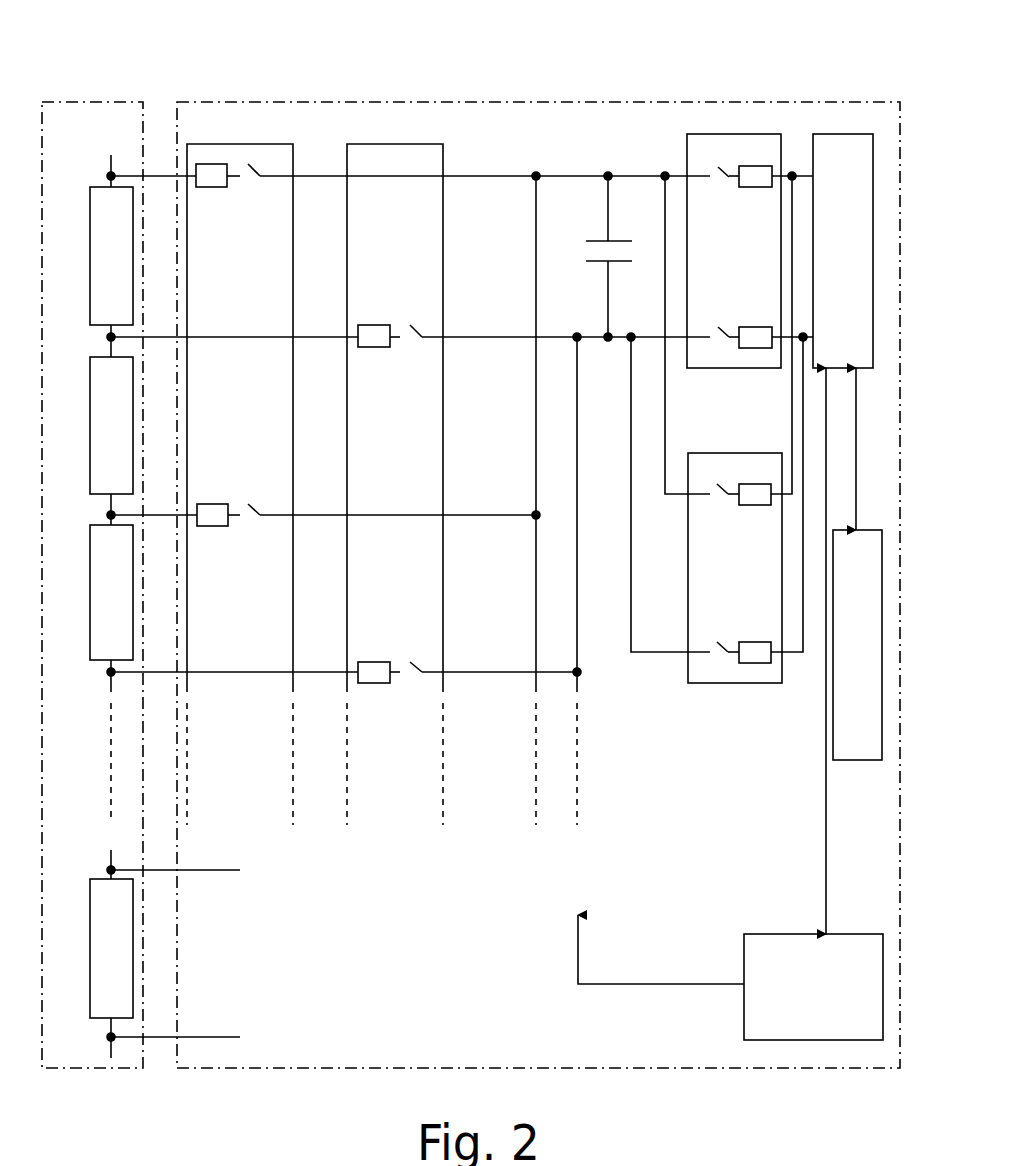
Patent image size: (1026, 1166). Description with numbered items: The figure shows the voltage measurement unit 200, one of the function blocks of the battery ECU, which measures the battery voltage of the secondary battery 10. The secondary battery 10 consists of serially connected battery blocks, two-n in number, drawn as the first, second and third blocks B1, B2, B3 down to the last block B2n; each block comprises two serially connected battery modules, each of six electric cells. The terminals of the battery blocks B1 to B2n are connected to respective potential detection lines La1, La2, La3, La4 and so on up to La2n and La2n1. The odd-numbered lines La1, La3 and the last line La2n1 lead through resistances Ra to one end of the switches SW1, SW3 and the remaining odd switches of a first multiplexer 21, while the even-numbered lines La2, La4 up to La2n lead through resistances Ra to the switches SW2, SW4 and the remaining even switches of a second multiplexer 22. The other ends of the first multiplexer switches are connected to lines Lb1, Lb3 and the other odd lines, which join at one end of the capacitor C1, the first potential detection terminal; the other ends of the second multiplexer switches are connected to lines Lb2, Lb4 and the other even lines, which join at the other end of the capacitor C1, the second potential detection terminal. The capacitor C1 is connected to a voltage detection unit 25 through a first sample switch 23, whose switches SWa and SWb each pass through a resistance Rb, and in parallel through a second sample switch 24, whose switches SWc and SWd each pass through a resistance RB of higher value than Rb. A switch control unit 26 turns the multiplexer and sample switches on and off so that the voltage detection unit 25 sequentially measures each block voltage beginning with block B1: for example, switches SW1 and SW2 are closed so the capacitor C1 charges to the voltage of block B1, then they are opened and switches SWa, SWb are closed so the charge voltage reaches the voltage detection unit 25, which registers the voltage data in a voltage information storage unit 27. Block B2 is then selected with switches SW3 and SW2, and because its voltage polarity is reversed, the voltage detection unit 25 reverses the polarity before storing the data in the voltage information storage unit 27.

The secondary battery 10 is at (80, 102).
The voltage measurement unit 200 is at (495, 102).
The first multiplexer 21 is at (263, 144).
The second multiplexer 22 is at (420, 144).
The first sample switch 23 is at (732, 134).
The second sample switch 24 is at (733, 453).
The voltage detection unit 25 is at (867, 134).
The switch control unit 26 is at (752, 934).
The voltage information storage unit 27 is at (875, 530).
The battery block B1 is at (95, 256).
The battery block B2 is at (95, 441).
The battery block B3 is at (95, 608).
The battery block B2n is at (91, 954).
The capacitor C1 is at (587, 256).
The switch SW1 is at (217, 80).
The switch SW2 is at (377, 253).
The switch SW3 is at (237, 475).
The switch SW4 is at (370, 590).
The switch SWa is at (768, 90).
The switch SWb is at (763, 252).
The switch SWc is at (758, 505).
The switch SWd is at (750, 710).
The potential detection line La1 is at (155, 176).
The potential detection line La2 is at (240, 337).
The potential detection line La3 is at (167, 515).
The potential detection line La4 is at (232, 672).
The potential detection line La2n is at (220, 870).
The potential detection line La2n1 is at (220, 1037).
The potential detection line Lb1 is at (493, 178).
The potential detection line Lb2 is at (513, 338).
The potential detection line Lb3 is at (483, 517).
The potential detection line Lb4 is at (513, 673).